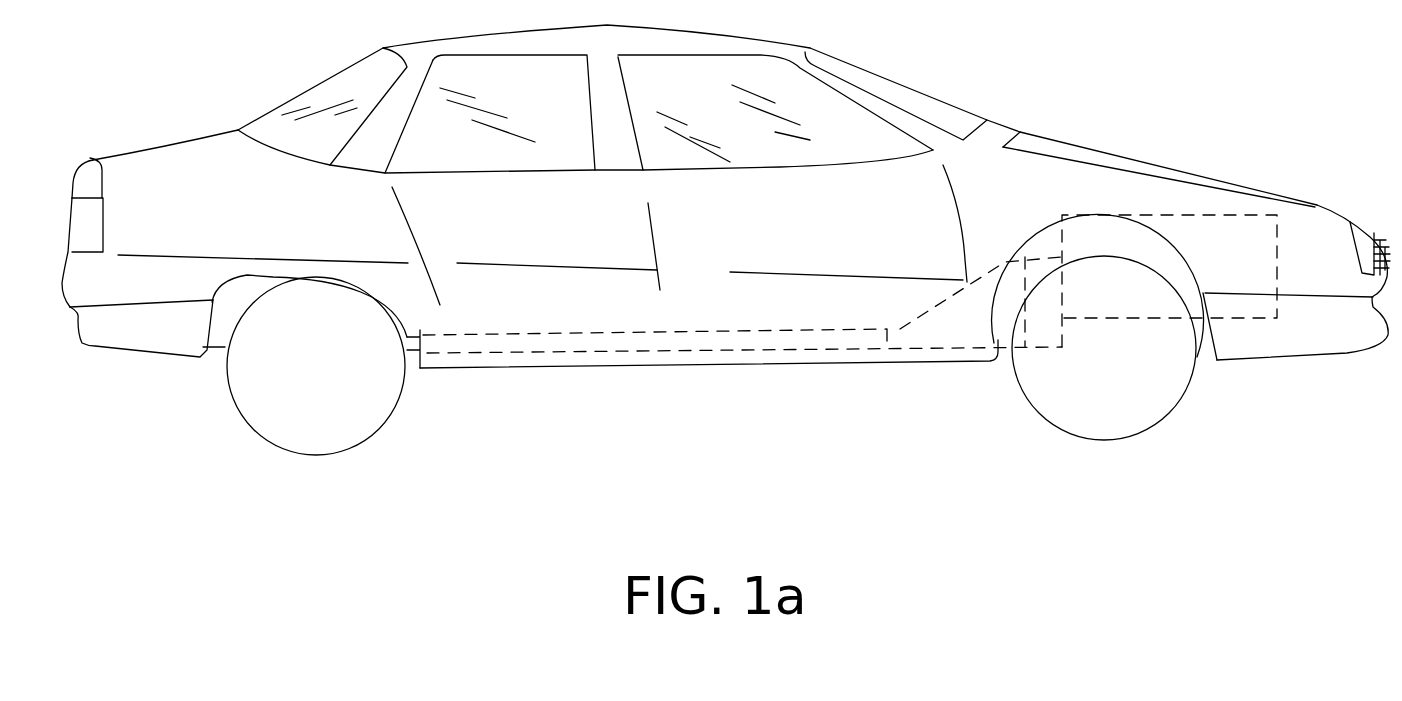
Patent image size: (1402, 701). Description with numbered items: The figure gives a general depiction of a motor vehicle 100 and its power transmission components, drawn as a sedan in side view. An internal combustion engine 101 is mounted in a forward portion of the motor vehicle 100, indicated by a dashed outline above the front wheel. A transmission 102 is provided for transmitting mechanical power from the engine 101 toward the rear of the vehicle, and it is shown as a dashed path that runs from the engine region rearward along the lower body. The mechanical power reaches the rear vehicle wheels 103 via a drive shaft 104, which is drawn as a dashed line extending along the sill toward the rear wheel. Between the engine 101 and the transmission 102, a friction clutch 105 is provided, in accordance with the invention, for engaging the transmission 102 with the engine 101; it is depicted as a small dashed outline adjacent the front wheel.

The motor vehicle 100 is at (1254, 504).
The internal combustion engine 101 is at (1200, 270).
The transmission 102 is at (955, 330).
The rear vehicle wheels 103 is at (342, 418).
The drive shaft 104 is at (663, 350).
The friction clutch 105 is at (1048, 330).